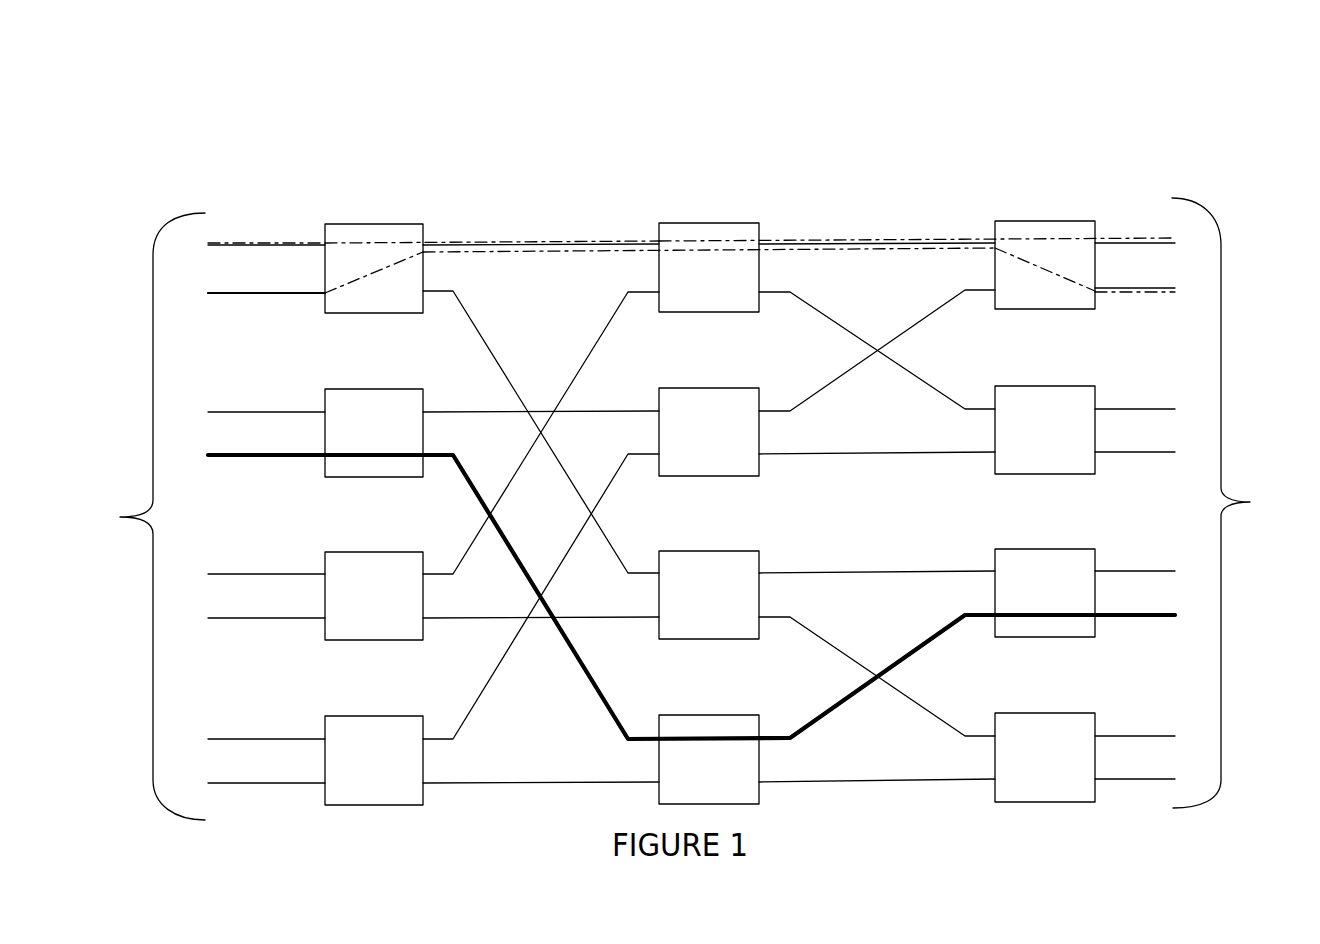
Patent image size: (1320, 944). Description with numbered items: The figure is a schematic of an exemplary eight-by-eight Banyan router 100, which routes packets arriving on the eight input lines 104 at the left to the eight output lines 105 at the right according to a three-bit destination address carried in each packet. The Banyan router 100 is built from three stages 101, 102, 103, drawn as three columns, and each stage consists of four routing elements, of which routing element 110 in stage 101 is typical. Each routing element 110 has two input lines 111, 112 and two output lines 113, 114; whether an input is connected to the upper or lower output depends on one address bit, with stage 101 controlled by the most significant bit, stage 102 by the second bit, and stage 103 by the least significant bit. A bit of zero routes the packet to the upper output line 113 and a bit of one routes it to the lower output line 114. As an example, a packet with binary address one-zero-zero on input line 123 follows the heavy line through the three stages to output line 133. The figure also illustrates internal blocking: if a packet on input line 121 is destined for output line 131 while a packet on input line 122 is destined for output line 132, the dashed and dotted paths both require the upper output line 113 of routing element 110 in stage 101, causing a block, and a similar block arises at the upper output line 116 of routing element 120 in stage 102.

The Banyan router 100 is at (216, 124).
The first stage 101 is at (391, 470).
The second stage 102 is at (732, 469).
The third stage 103 is at (1035, 190).
The input lines 104 is at (128, 516).
The output lines 105 is at (1240, 503).
The routing element 110 is at (417, 233).
The input line of routing element 111 is at (278, 250).
The input line of routing element 112 is at (283, 296).
The upper output line of routing element 113 is at (498, 243).
The lower output line of routing element 114 is at (470, 316).
The upper output line of routing element 120 116 is at (826, 250).
The routing element 120 is at (747, 233).
The input line 121 is at (250, 245).
The input line 122 is at (218, 297).
The input line 123 is at (233, 457).
The output line 131 is at (1120, 238).
The output line 132 is at (1127, 293).
The output line 133 is at (1143, 735).